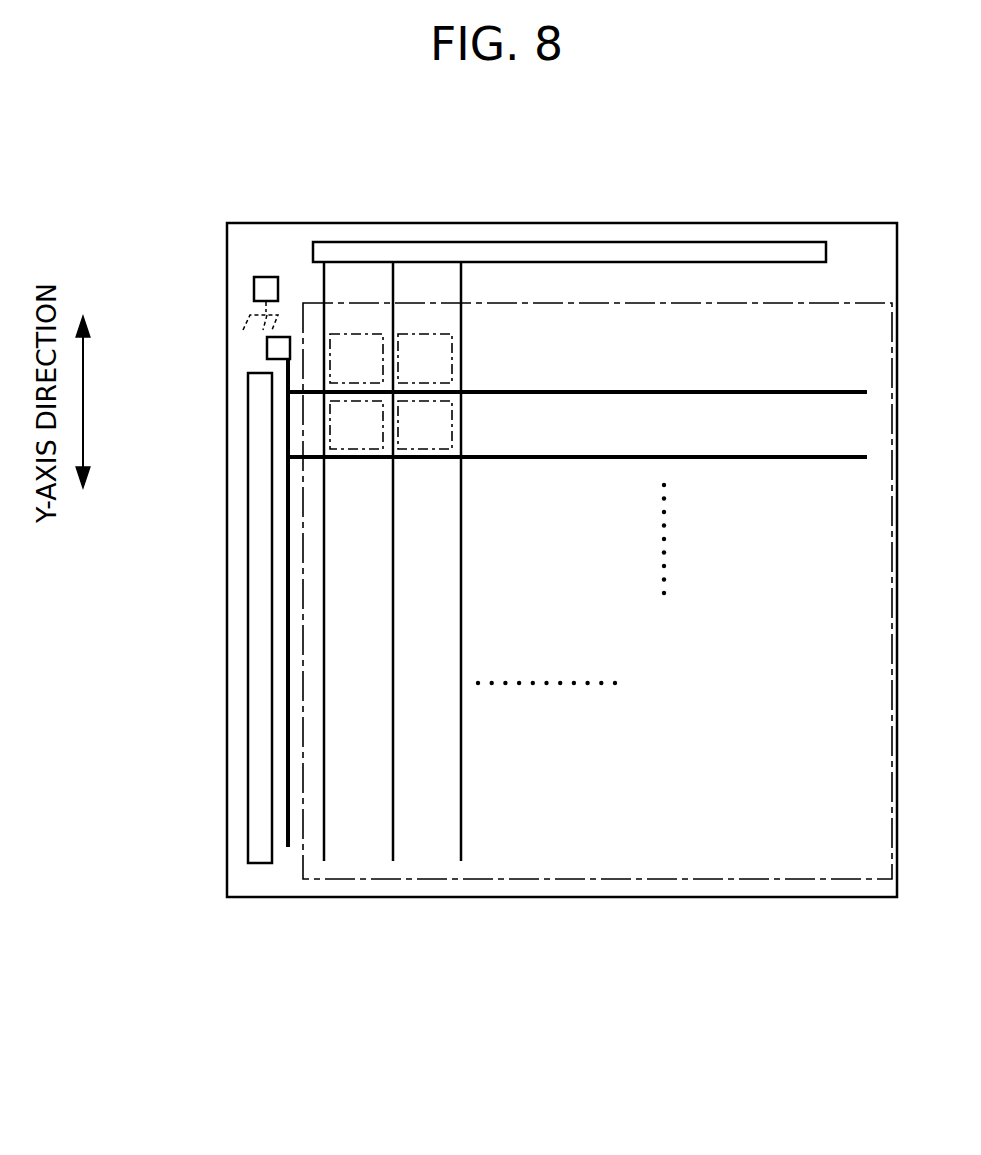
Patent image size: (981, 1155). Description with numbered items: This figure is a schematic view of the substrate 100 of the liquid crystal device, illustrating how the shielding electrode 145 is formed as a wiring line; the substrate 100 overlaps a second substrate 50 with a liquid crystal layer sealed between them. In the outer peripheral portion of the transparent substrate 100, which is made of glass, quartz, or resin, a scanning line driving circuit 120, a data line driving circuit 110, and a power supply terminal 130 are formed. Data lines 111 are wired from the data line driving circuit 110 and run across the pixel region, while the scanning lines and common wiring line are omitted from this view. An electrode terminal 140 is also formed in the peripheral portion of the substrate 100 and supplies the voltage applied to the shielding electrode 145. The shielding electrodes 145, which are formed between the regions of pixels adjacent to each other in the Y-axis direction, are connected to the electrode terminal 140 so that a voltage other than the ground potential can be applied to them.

The substrate 50 is at (710, 879).
The substrate 100 is at (227, 615).
The data line driving circuit 110 is at (523, 250).
The data line 111 is at (322, 273).
The scanning line driving circuit 120 is at (260, 455).
The power supply terminal 130 is at (266, 287).
The electrode terminal 140 is at (275, 348).
The shielding electrode 145 is at (475, 393).